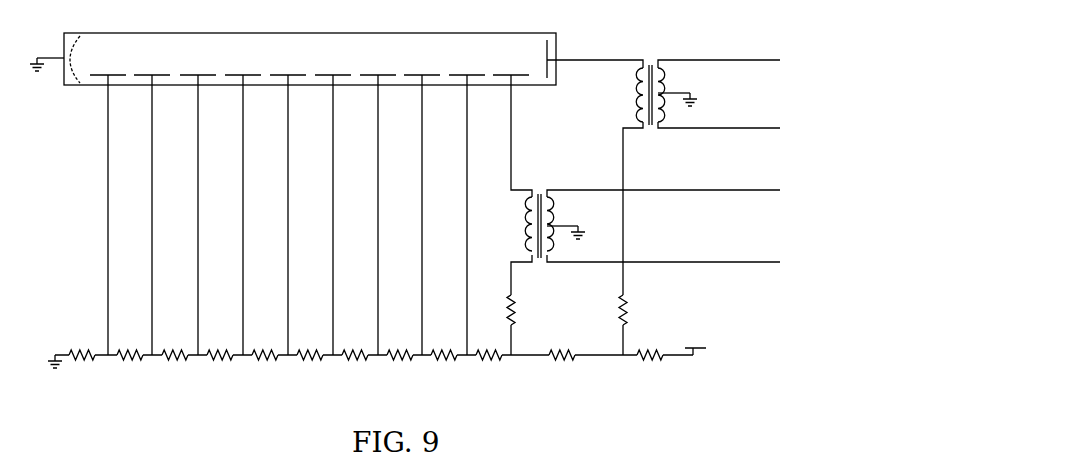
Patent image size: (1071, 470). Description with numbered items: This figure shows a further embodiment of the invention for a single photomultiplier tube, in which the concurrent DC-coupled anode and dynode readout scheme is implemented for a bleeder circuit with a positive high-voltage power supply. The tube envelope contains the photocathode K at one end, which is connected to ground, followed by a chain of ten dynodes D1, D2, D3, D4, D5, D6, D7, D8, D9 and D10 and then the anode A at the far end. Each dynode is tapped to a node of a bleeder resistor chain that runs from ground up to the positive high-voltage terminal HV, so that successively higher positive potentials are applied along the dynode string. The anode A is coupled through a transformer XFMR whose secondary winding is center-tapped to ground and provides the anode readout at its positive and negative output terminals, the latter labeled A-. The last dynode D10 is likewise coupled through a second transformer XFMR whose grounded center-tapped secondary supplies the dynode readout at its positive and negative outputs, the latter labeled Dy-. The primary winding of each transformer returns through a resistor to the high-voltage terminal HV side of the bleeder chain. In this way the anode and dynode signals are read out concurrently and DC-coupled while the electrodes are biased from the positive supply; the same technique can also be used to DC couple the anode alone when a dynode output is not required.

The photocathode K is at (55, 59).
The first dynode D1 is at (108, 206).
The second dynode D2 is at (152, 206).
The third dynode D3 is at (198, 206).
The fourth dynode D4 is at (243, 206).
The fifth dynode D5 is at (288, 206).
The sixth dynode D6 is at (333, 206).
The seventh dynode D7 is at (378, 206).
The eighth dynode D8 is at (422, 206).
The ninth dynode D9 is at (467, 206).
The tenth dynode D10 is at (512, 203).
The anode A is at (588, 59).
The transformer XFMR is at (609, 198).
The anode negative output A- is at (719, 120).
The dynode negative output Dy- is at (663, 254).
The positive high-voltage power supply HV is at (692, 343).